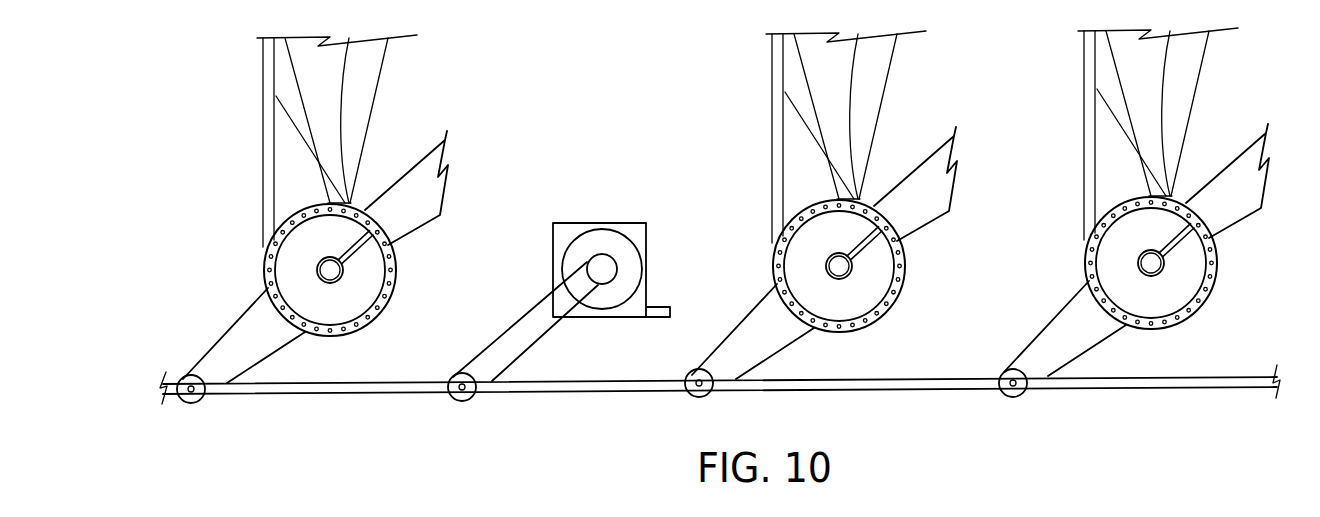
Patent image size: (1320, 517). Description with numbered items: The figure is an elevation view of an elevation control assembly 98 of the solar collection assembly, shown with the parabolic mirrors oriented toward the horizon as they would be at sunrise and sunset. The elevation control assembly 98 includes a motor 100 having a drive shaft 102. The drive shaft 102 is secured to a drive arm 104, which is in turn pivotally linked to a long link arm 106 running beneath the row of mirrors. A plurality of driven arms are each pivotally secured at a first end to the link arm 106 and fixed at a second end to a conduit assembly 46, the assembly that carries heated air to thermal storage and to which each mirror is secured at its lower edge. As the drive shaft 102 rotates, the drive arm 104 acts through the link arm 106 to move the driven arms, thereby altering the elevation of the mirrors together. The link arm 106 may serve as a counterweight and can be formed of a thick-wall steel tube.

The conduit assembly 46 is at (871, 266).
The elevation control assembly 98 is at (646, 99).
The motor 100 is at (647, 243).
The drive shaft 102 is at (601, 258).
The drive arm 104 is at (514, 324).
The link arm 106 is at (367, 395).